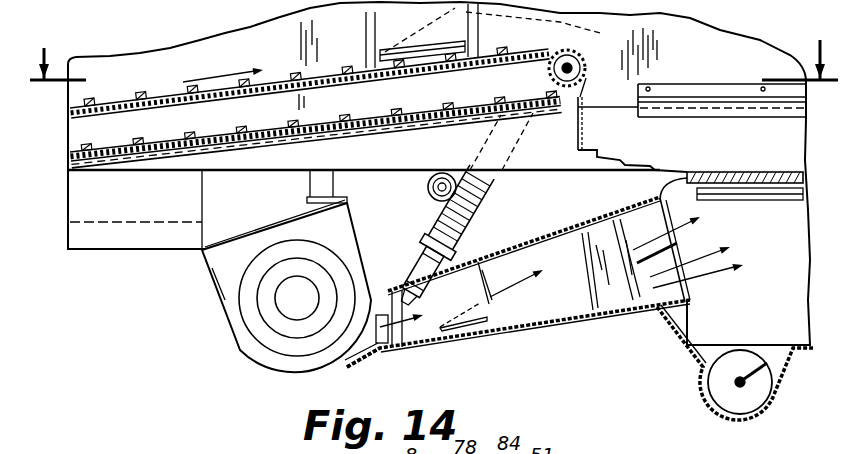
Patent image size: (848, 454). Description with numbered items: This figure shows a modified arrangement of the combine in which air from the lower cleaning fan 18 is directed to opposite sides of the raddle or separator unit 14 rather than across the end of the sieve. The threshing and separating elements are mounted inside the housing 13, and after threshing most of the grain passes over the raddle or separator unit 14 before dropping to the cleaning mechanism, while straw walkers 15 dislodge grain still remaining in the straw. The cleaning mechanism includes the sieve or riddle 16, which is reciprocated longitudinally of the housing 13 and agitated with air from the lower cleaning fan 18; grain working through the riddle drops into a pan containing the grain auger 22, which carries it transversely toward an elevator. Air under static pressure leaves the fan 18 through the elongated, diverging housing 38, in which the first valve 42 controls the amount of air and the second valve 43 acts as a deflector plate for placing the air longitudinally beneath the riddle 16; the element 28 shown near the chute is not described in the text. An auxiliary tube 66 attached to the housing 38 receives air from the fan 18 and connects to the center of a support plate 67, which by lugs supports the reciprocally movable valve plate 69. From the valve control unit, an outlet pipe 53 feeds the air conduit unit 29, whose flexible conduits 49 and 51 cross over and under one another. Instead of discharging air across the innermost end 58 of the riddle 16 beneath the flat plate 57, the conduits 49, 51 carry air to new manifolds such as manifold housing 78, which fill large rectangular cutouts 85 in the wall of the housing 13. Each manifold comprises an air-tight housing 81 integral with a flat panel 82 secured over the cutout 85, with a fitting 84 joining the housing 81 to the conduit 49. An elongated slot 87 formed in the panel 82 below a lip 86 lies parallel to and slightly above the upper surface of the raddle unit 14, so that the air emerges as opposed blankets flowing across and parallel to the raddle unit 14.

The housing 13 is at (707, 38).
The raddle or separator unit 14 is at (268, 45).
The straw walkers 15 is at (432, 46).
The sieve or riddle 16 is at (762, 133).
The lower cleaning fan 18 is at (250, 360).
The grain auger 22 is at (727, 397).
The discharge chute 28 is at (529, 347).
The air conduit unit 29 is at (502, 218).
The diverging-type housing 38 is at (570, 323).
The first valve 42 is at (485, 328).
The second valve 43 is at (673, 243).
The flexible conduit 49 is at (433, 172).
The flexible conduit 51 is at (500, 187).
The outlet pipe 53 is at (456, 250).
The flat plate 57 is at (737, 131).
The innermost end 58 is at (750, 193).
The auxiliary tube 66 is at (410, 263).
The support plate 67 is at (415, 247).
The valve plate 69 is at (425, 232).
The manifold housing 78 is at (346, 14).
The air-tight housing 81 is at (385, 52).
The flat panel 82 is at (377, 38).
The fitting 84 is at (545, 28).
The rectangular cutout 85 is at (377, 22).
The lip 86 is at (440, 55).
The elongated slot 87 is at (423, 68).